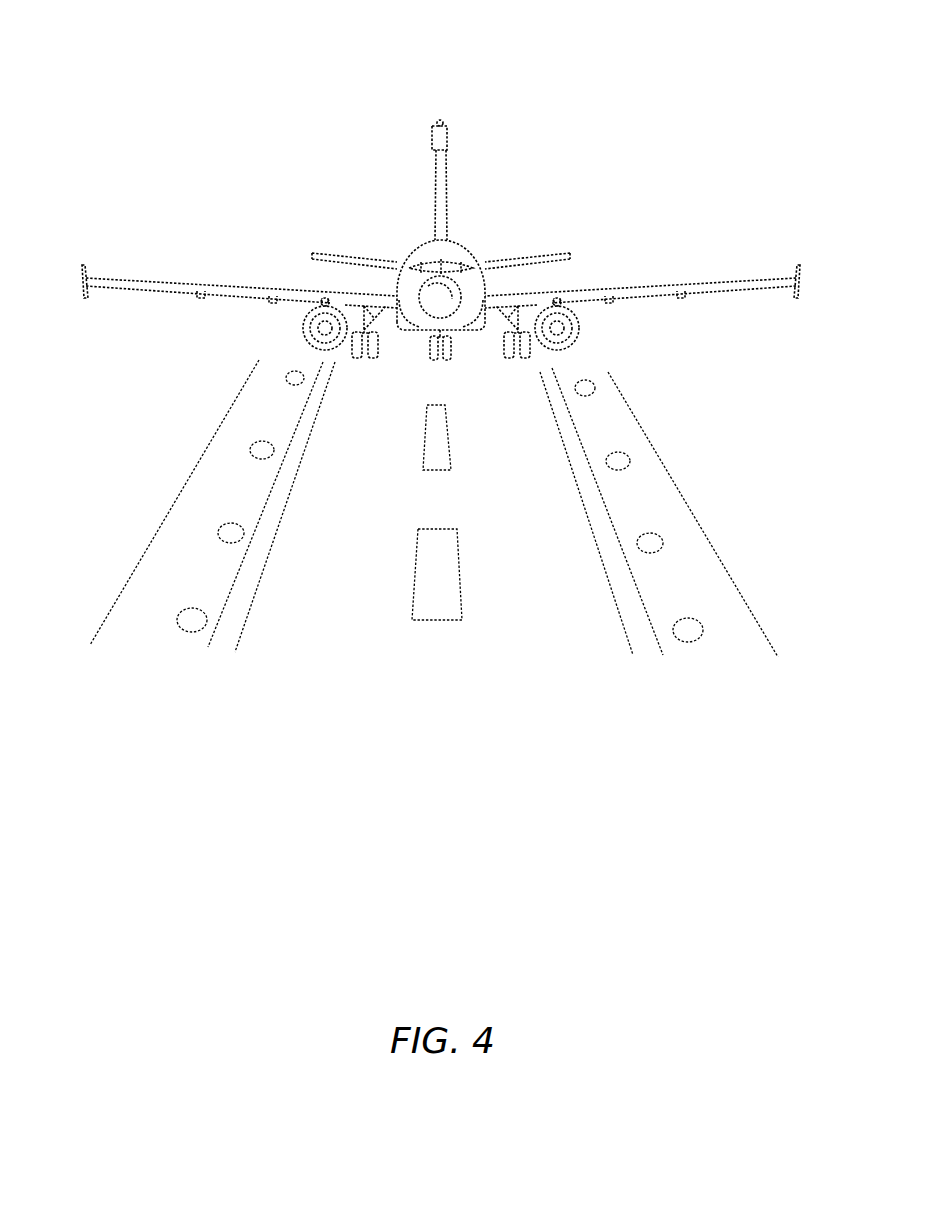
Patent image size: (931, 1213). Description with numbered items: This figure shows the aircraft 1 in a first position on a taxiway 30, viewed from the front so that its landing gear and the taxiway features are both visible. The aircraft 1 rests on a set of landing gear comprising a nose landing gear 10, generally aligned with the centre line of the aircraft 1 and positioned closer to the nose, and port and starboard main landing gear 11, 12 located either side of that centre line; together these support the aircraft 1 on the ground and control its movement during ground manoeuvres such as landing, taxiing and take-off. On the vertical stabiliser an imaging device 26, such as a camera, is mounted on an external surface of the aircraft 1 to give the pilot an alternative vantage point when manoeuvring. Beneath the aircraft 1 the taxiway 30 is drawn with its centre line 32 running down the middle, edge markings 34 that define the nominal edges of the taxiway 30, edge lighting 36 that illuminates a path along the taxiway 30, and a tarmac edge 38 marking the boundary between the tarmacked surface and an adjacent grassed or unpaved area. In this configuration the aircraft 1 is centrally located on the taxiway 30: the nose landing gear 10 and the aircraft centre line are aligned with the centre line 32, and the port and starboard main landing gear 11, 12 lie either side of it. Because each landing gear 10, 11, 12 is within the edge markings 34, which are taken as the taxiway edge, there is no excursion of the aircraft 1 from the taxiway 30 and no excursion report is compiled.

The aircraft 1 is at (441, 242).
The nose landing gear 10 is at (443, 352).
The port main landing gear 11 is at (518, 350).
The starboard main landing gear 12 is at (367, 350).
The imaging device 26 is at (440, 137).
The taxiway 30 is at (435, 577).
The centre line 32 is at (437, 597).
The edge markings 34 is at (223, 637).
The edge lighting 36 is at (192, 622).
The tarmac edge 38 is at (107, 617).